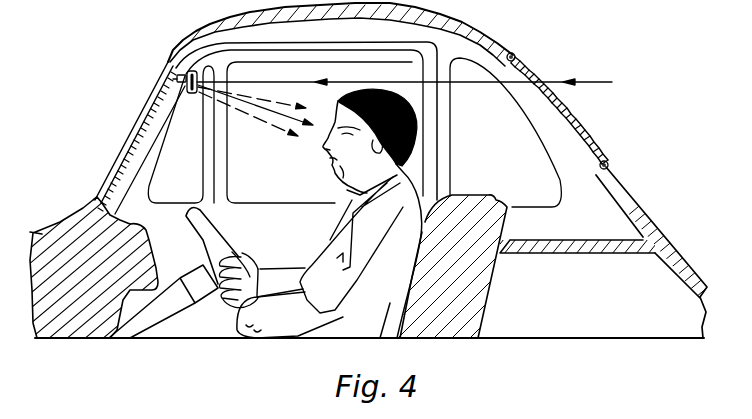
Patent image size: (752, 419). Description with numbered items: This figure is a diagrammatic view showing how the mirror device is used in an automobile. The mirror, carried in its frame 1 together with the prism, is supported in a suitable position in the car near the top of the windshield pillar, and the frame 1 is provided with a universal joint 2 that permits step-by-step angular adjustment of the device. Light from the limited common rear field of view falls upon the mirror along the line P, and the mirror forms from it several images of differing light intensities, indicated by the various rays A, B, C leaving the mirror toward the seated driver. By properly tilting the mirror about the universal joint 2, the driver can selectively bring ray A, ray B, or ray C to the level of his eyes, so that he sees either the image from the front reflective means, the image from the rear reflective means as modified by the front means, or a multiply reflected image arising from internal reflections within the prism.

The frame 1 is at (192, 93).
The universal joint 2 is at (173, 79).
The line of incident light P is at (370, 80).
The ray A is at (284, 103).
The ray B is at (261, 108).
The ray C is at (272, 125).